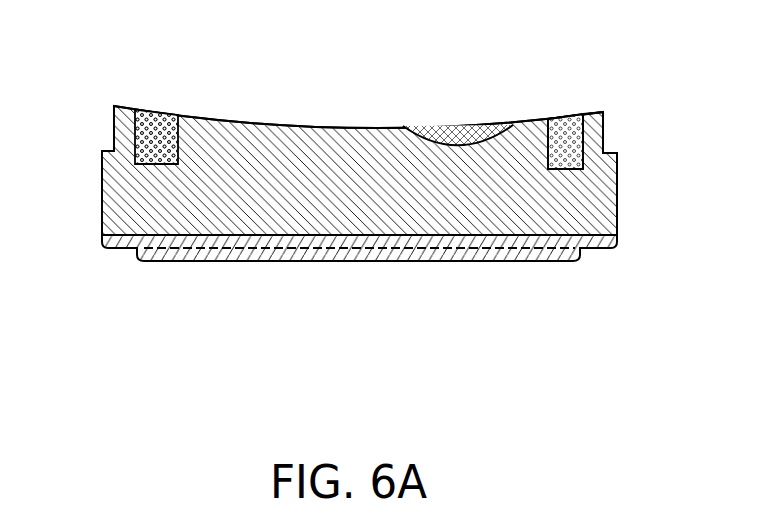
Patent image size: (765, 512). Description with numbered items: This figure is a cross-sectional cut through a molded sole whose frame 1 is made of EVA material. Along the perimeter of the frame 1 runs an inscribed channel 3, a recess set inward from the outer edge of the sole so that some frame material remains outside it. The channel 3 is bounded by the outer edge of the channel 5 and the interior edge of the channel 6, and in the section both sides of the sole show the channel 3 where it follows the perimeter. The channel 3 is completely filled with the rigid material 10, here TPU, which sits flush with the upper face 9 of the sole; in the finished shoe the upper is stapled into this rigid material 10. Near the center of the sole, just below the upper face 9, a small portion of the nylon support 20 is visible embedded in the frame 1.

The frame 1 is at (155, 197).
The inscribed channel 3 is at (547, 117).
The outer edge of the channel 5 is at (597, 112).
The interior edge of the channel 6 is at (177, 113).
The upper face 9 is at (281, 123).
The rigid material 10 is at (140, 113).
The support 20 is at (453, 137).